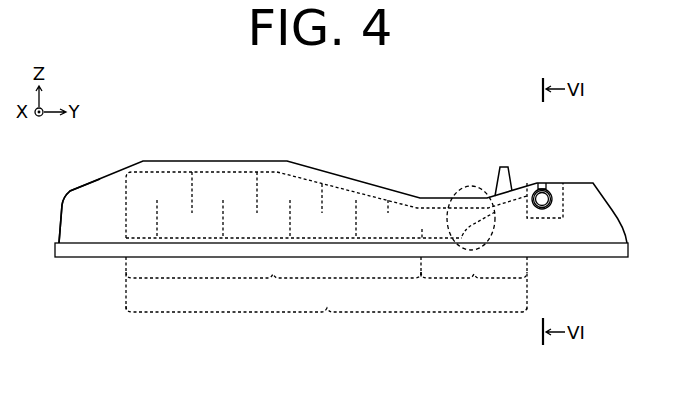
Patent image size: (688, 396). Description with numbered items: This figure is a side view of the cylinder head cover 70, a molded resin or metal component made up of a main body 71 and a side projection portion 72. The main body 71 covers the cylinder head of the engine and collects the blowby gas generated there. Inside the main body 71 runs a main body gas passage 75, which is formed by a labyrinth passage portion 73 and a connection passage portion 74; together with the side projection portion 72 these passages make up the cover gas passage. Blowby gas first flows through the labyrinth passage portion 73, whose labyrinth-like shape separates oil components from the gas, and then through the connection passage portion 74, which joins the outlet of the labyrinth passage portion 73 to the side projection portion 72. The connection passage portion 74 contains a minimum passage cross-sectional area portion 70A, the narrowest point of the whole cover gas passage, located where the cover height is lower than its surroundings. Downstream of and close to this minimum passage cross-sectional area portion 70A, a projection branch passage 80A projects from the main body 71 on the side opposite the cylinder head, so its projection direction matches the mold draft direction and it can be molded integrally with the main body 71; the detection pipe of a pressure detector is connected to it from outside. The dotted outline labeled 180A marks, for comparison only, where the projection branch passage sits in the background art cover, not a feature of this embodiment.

The cylinder head cover 70 is at (128, 148).
The main body 71 is at (86, 201).
The minimum passage cross-sectional area portion 70A is at (454, 187).
The projection branch passage 80A is at (497, 172).
The projection branch passage position in background art cylinder head cover 180A is at (544, 182).
The side projection portion 72 is at (562, 197).
The labyrinth passage portion 73 is at (273, 285).
The connection passage portion 74 is at (474, 285).
The main body gas passage 75 is at (326, 327).